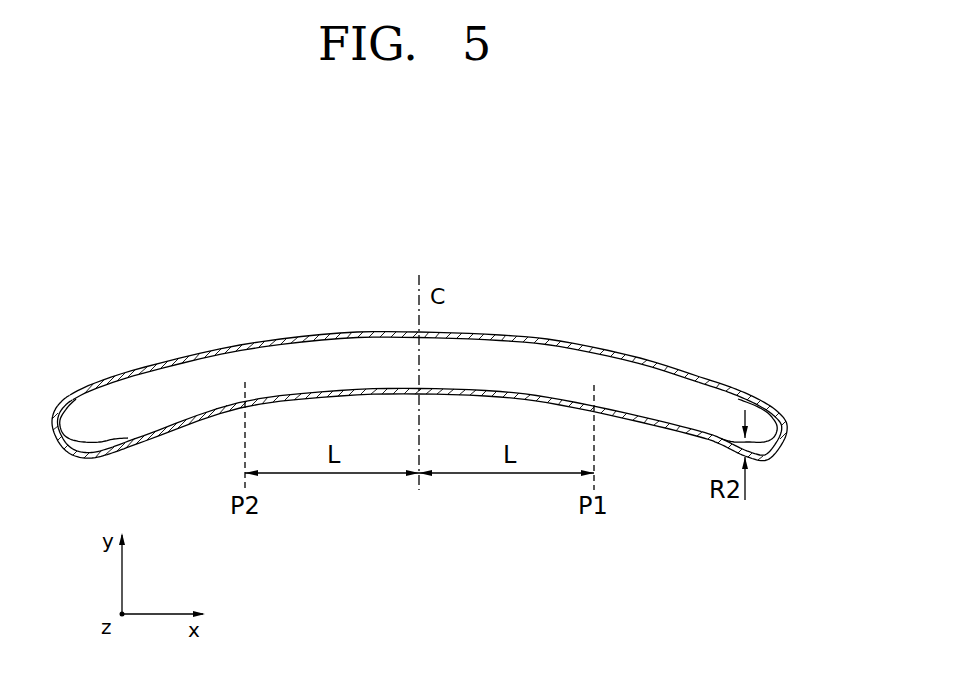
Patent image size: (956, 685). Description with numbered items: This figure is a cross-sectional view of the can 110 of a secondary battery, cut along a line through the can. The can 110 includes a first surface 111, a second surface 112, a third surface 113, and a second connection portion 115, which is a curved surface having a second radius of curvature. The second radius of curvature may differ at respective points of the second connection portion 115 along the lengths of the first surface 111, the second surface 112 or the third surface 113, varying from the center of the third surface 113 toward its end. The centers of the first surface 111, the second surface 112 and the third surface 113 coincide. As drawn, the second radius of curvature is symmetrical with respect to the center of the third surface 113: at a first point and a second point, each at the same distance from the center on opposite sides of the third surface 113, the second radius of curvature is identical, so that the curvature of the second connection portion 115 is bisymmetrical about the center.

The can 110 is at (440, 386).
The first surface 111 is at (517, 332).
The second surface 112 is at (667, 432).
The third surface 113 is at (638, 377).
The second connection portion 115 is at (762, 442).